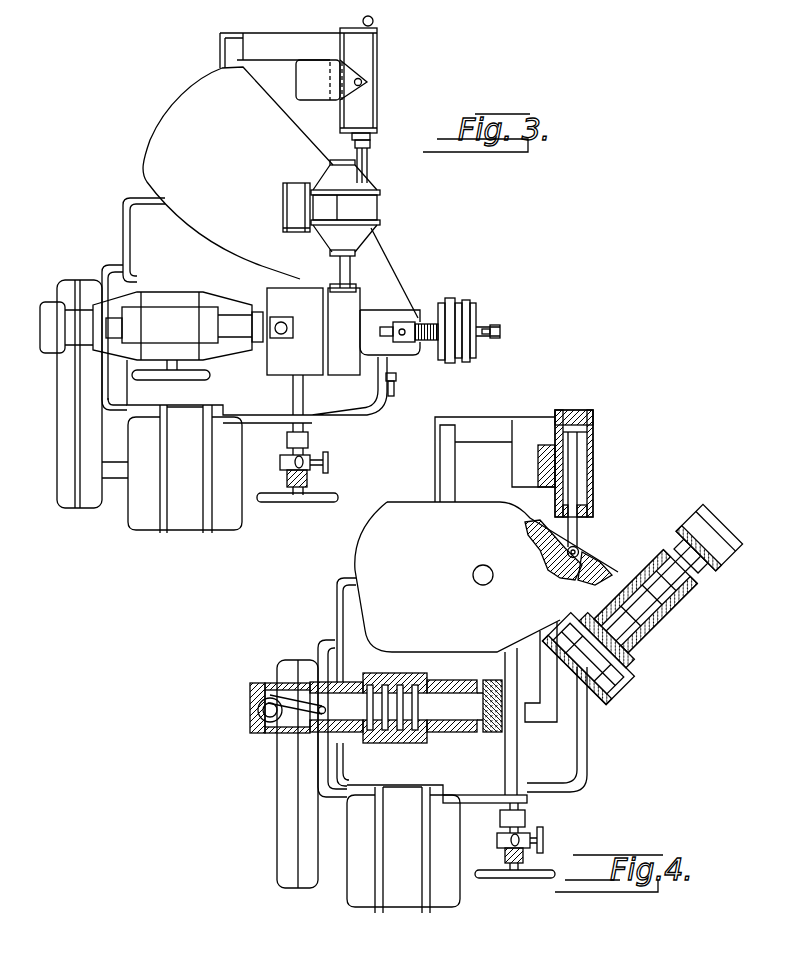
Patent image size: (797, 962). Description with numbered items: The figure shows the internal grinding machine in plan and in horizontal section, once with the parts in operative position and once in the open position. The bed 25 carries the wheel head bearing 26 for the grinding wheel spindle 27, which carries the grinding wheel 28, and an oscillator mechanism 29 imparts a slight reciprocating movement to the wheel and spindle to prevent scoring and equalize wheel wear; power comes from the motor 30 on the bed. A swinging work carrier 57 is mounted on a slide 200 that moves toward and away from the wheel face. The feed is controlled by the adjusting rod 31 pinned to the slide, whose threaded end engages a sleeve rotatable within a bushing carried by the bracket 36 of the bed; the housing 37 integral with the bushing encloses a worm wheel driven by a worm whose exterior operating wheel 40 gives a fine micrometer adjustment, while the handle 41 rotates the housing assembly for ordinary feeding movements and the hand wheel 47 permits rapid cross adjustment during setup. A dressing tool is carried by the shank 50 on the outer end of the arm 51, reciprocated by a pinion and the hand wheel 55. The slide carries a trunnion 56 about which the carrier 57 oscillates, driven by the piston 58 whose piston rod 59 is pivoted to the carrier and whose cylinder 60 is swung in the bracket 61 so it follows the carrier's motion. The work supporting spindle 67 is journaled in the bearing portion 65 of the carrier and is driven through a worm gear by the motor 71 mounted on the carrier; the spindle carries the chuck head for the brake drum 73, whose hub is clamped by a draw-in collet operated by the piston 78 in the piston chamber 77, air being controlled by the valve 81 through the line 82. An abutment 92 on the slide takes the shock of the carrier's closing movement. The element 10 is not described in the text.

In FIG. 3, the slide 200 is at (277, 68).
In FIG. 4, the slide 200 is at (487, 450).
In FIG. 3, the work carrier 57 is at (182, 178).
In FIG. 4, the work carrier 57 is at (402, 523).
In FIG. 3, the bed 25 is at (143, 236).
In FIG. 3, the wheel head bearing 26 is at (168, 298).
In FIG. 3, the arm 51 is at (235, 325).
In FIG. 3, the shank 50 is at (279, 321).
In FIG. 3, the motor 71 is at (360, 207).
In FIG. 3, the valve stem 10 is at (351, 272).
In FIG. 3, the valve 81 is at (405, 324).
In FIG. 3, the line 82 is at (478, 322).
In FIG. 3, the hand wheel 55 is at (205, 378).
In FIG. 3, the adjusting rod 31 is at (298, 395).
In FIG. 3, the bracket 36 is at (308, 440).
In FIG. 4, the bracket 36 is at (525, 818).
In FIG. 3, the housing 37 is at (282, 462).
In FIG. 4, the housing 37 is at (502, 837).
In FIG. 3, the operating wheel 40 is at (329, 460).
In FIG. 4, the operating wheel 40 is at (544, 837).
In FIG. 3, the handle 41 is at (310, 480).
In FIG. 4, the handle 41 is at (523, 855).
In FIG. 3, the hand wheel 47 is at (288, 497).
In FIG. 4, the hand wheel 47 is at (498, 879).
In FIG. 3, the motor 30 is at (140, 503).
In FIG. 4, the motor 30 is at (365, 895).
In FIG. 4, the bracket 61 is at (528, 455).
In FIG. 4, the piston 58 is at (580, 432).
In FIG. 4, the cylinder 60 is at (582, 468).
In FIG. 4, the piston rod 59 is at (580, 532).
In FIG. 4, the trunnion 56 is at (473, 573).
In FIG. 4, the piston chamber 77 is at (722, 537).
In FIG. 4, the piston 78 is at (718, 553).
In FIG. 4, the bearing portion 65 is at (677, 593).
In FIG. 4, the work supporting spindle 67 is at (667, 630).
In FIG. 4, the brake drum 73 is at (610, 693).
In FIG. 4, the oscillator mechanism 29 is at (250, 702).
In FIG. 4, the grinding wheel spindle 27 is at (446, 708).
In FIG. 4, the grinding wheel 28 is at (492, 733).
In FIG. 4, the abutment 92 is at (545, 713).